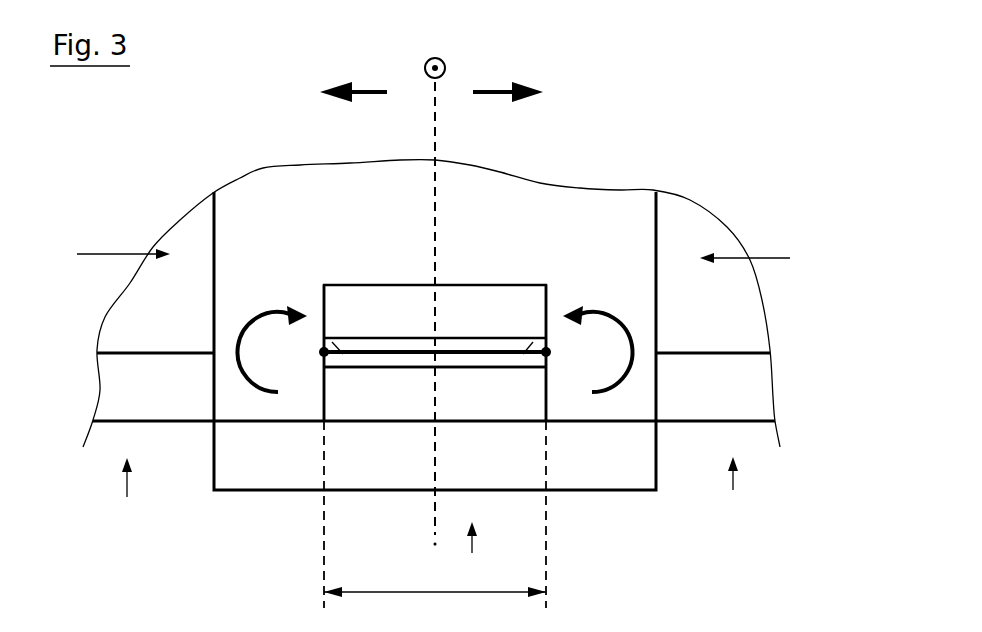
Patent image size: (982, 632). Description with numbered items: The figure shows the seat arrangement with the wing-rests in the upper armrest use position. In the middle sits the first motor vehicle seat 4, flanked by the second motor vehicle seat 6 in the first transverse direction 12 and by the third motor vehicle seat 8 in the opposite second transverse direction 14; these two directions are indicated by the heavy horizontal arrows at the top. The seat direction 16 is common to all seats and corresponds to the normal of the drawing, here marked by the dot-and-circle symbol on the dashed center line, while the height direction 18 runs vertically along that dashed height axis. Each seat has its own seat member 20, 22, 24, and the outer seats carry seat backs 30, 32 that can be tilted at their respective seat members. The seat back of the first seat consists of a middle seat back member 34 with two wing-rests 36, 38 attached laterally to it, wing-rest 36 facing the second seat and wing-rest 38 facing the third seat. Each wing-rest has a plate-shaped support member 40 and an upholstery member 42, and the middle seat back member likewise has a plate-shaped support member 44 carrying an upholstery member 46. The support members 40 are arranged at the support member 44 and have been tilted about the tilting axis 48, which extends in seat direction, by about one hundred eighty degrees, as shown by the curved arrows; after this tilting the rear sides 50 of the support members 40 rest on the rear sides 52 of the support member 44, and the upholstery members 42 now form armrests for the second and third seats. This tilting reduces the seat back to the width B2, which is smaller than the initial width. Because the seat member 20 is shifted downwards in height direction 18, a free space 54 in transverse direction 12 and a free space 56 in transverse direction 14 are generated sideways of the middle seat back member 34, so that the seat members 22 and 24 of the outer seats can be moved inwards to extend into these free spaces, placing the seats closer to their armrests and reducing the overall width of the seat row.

The first motor vehicle seat 4 is at (472, 551).
The second motor vehicle seat 6 is at (733, 486).
The third motor vehicle seat 8 is at (127, 490).
The first transverse direction 12 is at (500, 87).
The second transverse direction 14 is at (362, 87).
The seat direction 16 is at (425, 68).
The height direction 18 is at (433, 517).
The seat member 20 is at (460, 467).
The seat member 22 is at (675, 400).
The seat member 24 is at (190, 400).
The seat back 30 is at (760, 258).
The seat back 32 is at (109, 255).
The middle seat back member 34 is at (396, 404).
The wing-rest 36 is at (549, 277).
The wing-rest 38 is at (323, 274).
The plate-shaped support member 40 is at (395, 347).
The upholstery member 42 is at (362, 297).
The plate-shaped support member 44 is at (495, 360).
The upholstery member 46 is at (500, 395).
The tilting axis 48 is at (322, 351).
The rear side 50 is at (345, 355).
The rear side 52 is at (325, 330).
The free space 54 is at (652, 413).
The free space 56 is at (250, 411).
The width B2 is at (435, 522).